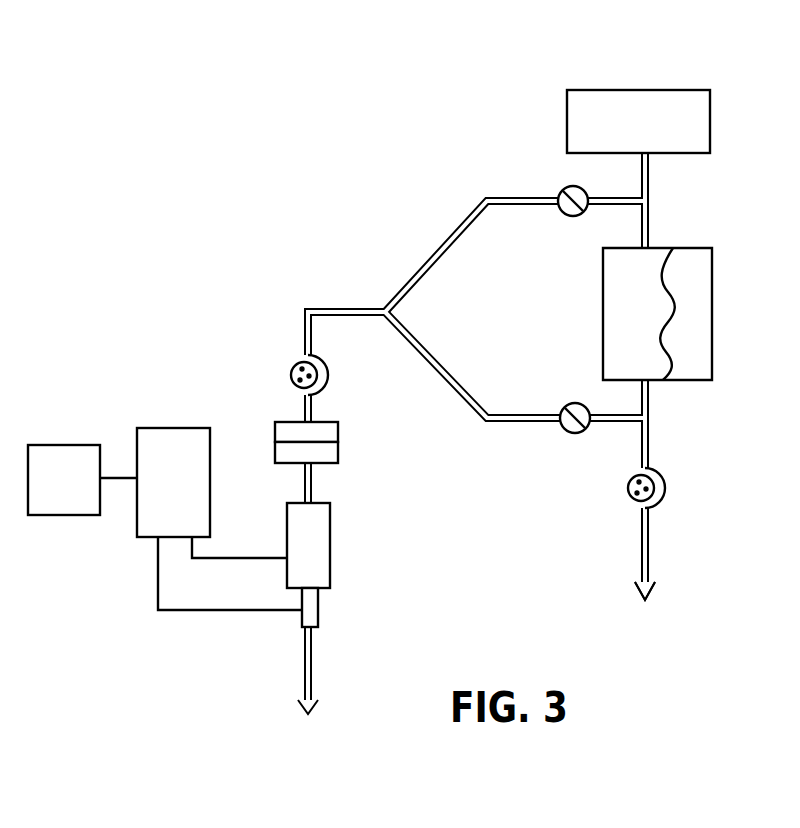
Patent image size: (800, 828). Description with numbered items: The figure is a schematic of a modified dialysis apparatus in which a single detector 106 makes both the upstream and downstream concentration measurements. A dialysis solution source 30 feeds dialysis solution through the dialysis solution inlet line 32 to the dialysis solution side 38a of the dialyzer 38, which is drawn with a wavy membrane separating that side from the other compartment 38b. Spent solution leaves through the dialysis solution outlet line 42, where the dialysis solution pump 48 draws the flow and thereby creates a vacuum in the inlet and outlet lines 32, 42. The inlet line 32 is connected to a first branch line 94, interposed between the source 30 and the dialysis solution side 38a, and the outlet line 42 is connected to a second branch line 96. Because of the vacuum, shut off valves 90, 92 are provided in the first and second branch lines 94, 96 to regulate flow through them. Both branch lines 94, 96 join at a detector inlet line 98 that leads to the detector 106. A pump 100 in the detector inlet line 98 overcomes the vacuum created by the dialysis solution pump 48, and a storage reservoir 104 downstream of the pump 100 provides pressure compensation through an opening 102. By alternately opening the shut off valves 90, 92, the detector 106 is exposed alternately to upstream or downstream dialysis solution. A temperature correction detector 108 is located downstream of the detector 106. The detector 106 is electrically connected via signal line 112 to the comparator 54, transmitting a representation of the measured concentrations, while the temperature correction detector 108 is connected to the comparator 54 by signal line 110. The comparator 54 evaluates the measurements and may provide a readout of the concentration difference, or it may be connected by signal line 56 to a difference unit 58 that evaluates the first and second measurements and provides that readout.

The dialysis solution source 30 is at (652, 88).
The dialysis solution inlet line 32 is at (650, 228).
The dialyzer 38 is at (713, 283).
The dialysis solution side 38a is at (618, 318).
The second filter chamber 38b is at (698, 315).
The dialysis solution outlet line 42 is at (650, 562).
The dialysis solution pump 48 is at (628, 488).
The comparator 54 is at (178, 428).
The signal line 56 is at (123, 470).
The difference unit 58 is at (63, 517).
The shut off valve 90 is at (568, 218).
The shut off valve 92 is at (578, 403).
The first branch line 94 is at (443, 245).
The second branch line 96 is at (458, 398).
The detector inlet line 98 is at (303, 335).
The pump 100 is at (293, 378).
The opening 102 is at (340, 433).
The storage reservoir 104 is at (340, 455).
The detector 106 is at (332, 528).
The temperature correction detector 108 is at (320, 605).
The signal line 110 is at (243, 612).
The signal line 112 is at (232, 555).